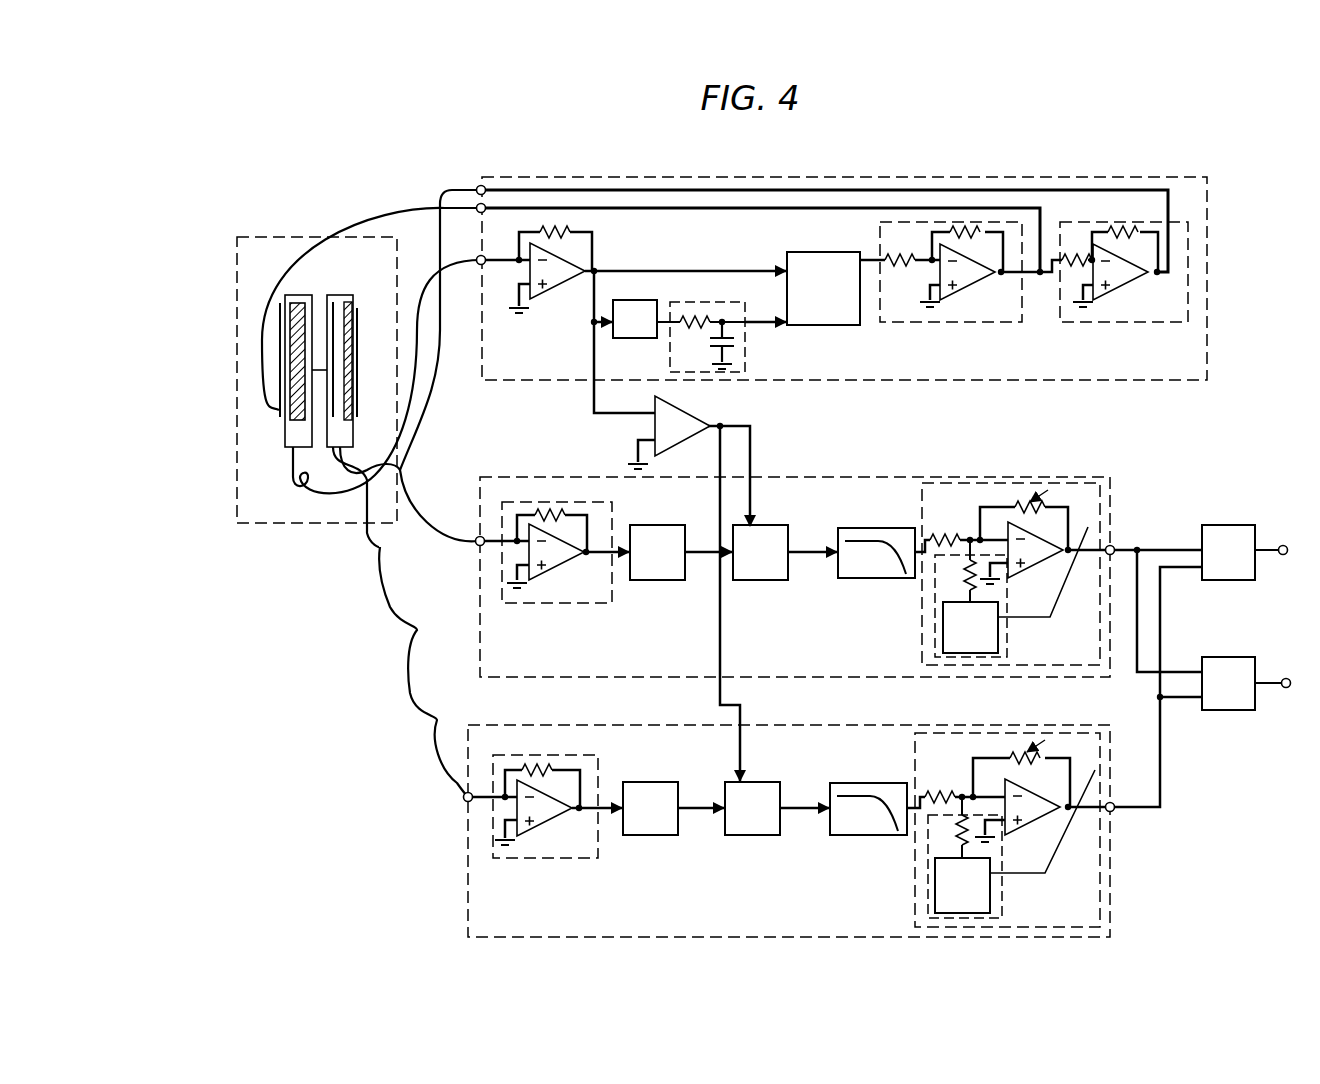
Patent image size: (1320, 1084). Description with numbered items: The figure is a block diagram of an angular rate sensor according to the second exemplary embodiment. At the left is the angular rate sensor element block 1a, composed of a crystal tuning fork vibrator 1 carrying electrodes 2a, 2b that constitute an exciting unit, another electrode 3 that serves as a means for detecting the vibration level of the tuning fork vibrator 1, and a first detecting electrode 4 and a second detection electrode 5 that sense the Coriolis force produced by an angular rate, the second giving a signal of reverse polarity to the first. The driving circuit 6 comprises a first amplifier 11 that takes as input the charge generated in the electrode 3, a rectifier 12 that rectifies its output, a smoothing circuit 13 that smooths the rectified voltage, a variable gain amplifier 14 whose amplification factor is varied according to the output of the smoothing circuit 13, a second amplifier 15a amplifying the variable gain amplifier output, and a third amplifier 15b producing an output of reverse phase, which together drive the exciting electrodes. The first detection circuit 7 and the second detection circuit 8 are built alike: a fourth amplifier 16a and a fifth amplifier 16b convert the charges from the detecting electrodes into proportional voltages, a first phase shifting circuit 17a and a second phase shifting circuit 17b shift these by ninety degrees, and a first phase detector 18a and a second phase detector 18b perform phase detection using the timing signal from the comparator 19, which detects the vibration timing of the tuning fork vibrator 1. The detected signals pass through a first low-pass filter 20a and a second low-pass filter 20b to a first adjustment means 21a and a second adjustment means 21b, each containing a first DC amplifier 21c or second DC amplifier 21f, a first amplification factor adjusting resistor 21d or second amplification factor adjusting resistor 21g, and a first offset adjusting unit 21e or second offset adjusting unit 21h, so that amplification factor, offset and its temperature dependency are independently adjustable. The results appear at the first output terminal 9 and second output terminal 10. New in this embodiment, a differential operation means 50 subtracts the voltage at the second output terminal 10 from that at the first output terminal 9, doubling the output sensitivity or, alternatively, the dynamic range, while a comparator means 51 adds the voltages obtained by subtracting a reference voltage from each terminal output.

The tuning fork vibrator 1 is at (288, 439).
The angular rate sensor element block 1a is at (266, 527).
The electrode 2a is at (280, 372).
The electrode 2b is at (293, 328).
The electrode 3 is at (331, 301).
The first detecting electrode 4 is at (360, 322).
The second detection electrode 5 is at (343, 298).
The driving circuit 6 is at (873, 380).
The first detection circuit 7 is at (1113, 511).
The second detection circuit 8 is at (760, 724).
The first output terminal 9 is at (1115, 546).
The second output terminal 10 is at (1114, 810).
The first amplifier 11 is at (541, 300).
The rectifier 12 is at (637, 300).
The smoothing circuit 13 is at (700, 302).
The variable gain amplifier 14 is at (812, 325).
The second amplifier 15a is at (948, 322).
The third amplifier 15b is at (1097, 322).
The fourth amplifier 16a is at (570, 605).
The fifth amplifier 16b is at (563, 860).
The first phase shifting circuit 17a is at (655, 582).
The second phase shifting circuit 17b is at (650, 838).
The first phase detector 18a is at (770, 582).
The second phase detector 18b is at (748, 838).
The comparator 19 is at (655, 420).
The first low-pass filter 20a is at (868, 580).
The second low-pass filter 20b is at (853, 838).
The first adjustment means 21a is at (1050, 665).
The second adjustment means 21b is at (993, 727).
The first DC amplifier 21c is at (1043, 546).
The first amplification factor adjusting resistor 21d is at (1010, 500).
The first offset adjusting unit 21e is at (1008, 630).
The second DC amplifier 21f is at (1043, 808).
The second amplification factor adjusting resistor 21g is at (1000, 750).
The second offset adjusting unit 21h is at (1002, 893).
The differential operation means 50 is at (1240, 525).
The comparator means 51 is at (1225, 710).